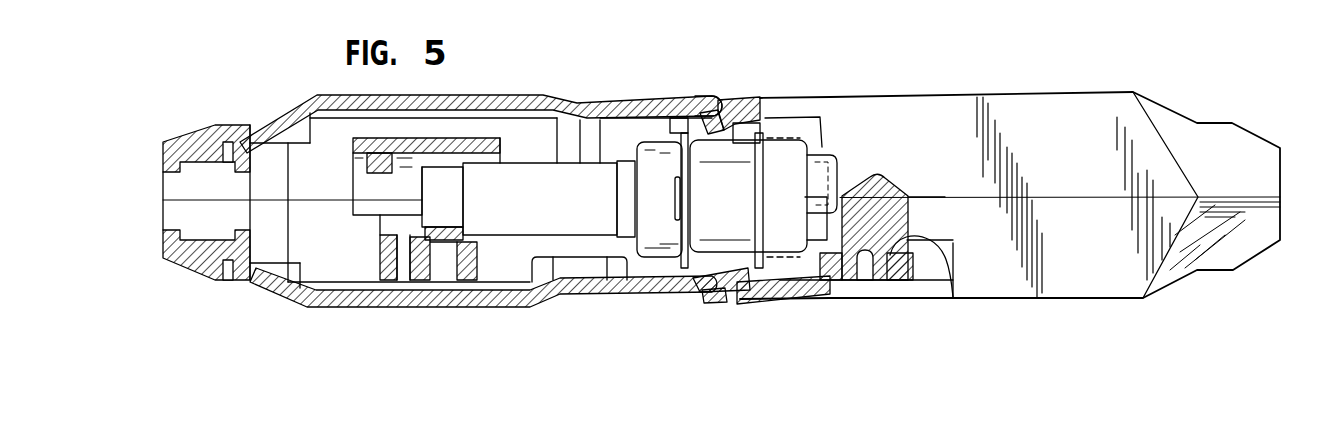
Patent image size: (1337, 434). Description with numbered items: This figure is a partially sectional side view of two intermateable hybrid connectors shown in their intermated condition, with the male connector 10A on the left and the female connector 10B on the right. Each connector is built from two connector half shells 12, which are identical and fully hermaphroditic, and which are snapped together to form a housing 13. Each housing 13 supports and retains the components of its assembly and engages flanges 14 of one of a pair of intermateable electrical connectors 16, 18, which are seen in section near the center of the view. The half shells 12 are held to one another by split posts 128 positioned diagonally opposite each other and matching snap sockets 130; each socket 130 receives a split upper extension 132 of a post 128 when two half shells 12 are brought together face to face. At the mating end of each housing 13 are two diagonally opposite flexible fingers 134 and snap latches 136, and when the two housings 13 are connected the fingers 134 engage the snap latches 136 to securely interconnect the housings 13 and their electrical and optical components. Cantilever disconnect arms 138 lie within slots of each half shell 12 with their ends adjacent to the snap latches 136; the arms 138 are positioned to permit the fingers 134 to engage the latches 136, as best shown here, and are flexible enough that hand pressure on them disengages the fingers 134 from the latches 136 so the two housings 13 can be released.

The male connector 10A is at (241, 102).
The female connector 10B is at (1175, 94).
The connector half shell 12 is at (318, 94).
The housing 13 is at (1076, 24).
The flange 14 is at (754, 167).
The electrical connector 16 is at (700, 238).
The electrical connector 18 is at (790, 157).
The split post 128 is at (888, 253).
The snap socket 130 is at (922, 241).
The split upper extension 132 is at (843, 300).
The flexible finger 134 is at (726, 102).
The snap latch 136 is at (723, 106).
The cantilever disconnect arm 138 is at (698, 93).